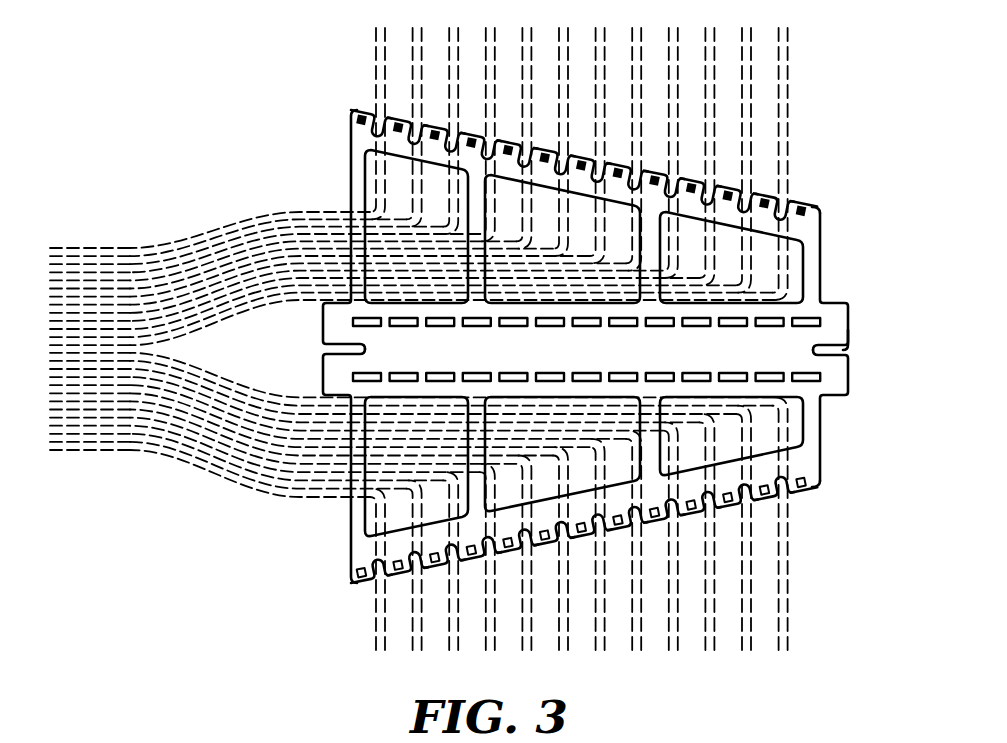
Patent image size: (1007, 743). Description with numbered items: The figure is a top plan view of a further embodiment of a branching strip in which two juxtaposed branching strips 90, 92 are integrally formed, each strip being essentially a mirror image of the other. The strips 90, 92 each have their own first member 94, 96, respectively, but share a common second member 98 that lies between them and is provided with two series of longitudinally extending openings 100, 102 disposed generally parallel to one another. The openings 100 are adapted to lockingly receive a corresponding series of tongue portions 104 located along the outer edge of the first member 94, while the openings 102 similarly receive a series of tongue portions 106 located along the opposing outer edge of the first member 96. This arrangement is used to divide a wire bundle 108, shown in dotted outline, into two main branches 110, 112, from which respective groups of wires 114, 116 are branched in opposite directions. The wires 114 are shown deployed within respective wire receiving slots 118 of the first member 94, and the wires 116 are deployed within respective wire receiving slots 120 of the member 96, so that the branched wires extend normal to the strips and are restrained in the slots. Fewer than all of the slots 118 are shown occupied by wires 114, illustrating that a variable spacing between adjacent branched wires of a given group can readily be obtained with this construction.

The branching strip 90 is at (821, 438).
The branching strip 92 is at (888, 262).
The first member 94 is at (820, 488).
The first member 96 is at (820, 207).
The common second member 98 is at (852, 320).
The longitudinally extending openings 100 is at (770, 372).
The longitudinally extending openings 102 is at (662, 325).
The tongue portions 104 is at (513, 556).
The tongue portions 106 is at (548, 150).
The wire bundle 108 is at (129, 248).
The main branch 110 is at (264, 486).
The main branch 112 is at (258, 214).
The wires 114 is at (462, 643).
The wires 116 is at (604, 50).
The wire receiving slots 118 is at (382, 590).
The wire receiving slots 120 is at (744, 206).